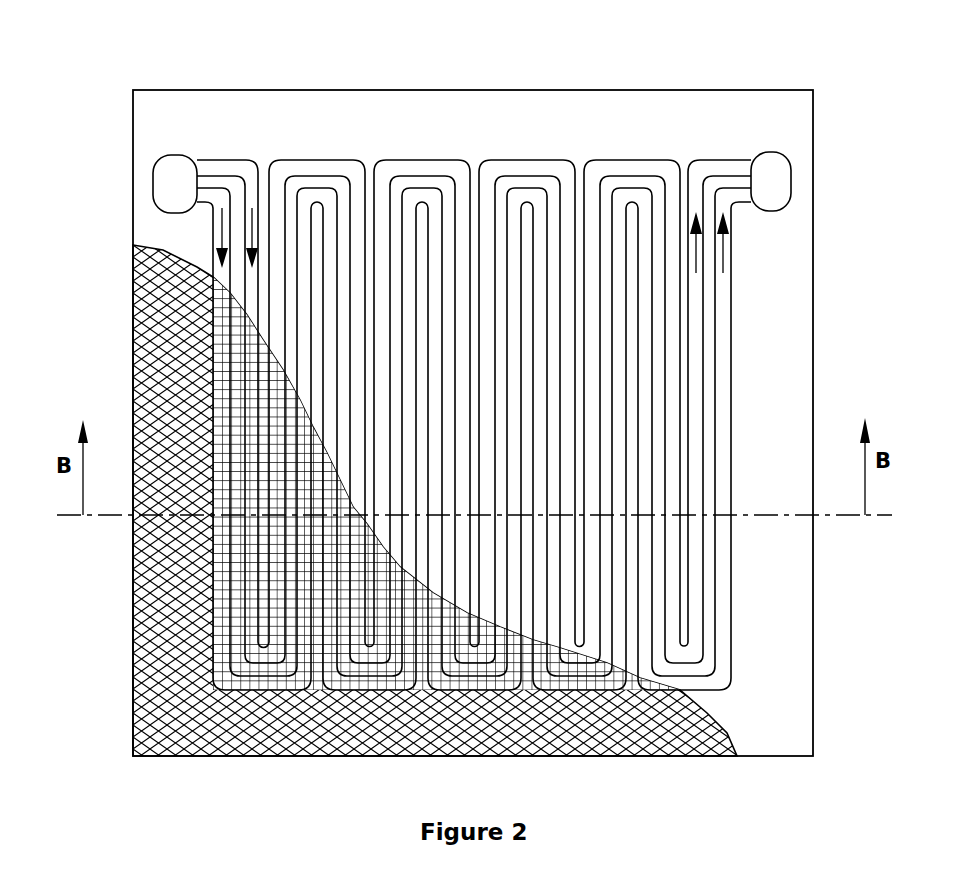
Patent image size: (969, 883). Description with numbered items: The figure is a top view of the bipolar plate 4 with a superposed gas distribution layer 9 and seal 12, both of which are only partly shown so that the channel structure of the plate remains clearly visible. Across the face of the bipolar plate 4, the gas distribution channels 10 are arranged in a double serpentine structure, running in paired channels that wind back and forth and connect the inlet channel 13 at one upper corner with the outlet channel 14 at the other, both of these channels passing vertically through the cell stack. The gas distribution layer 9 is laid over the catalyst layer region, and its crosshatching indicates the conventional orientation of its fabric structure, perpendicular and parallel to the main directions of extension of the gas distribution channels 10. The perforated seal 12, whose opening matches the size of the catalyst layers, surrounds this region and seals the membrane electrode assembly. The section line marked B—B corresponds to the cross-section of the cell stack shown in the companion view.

The bipolar plate 4 is at (275, 104).
The gas distribution layer 9 is at (300, 587).
The gas distribution channels 10 is at (449, 170).
The seal 12 is at (183, 403).
The inlet channel 13 is at (178, 165).
The outlet channel 14 is at (770, 164).